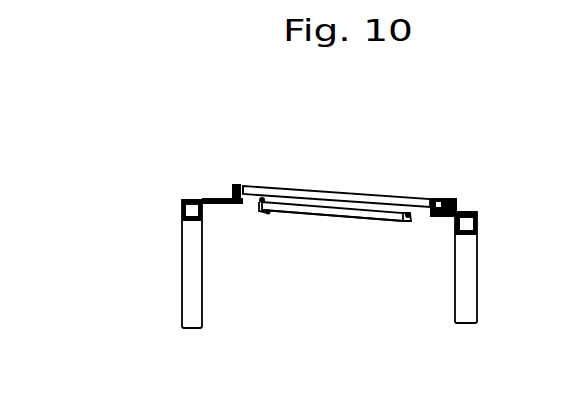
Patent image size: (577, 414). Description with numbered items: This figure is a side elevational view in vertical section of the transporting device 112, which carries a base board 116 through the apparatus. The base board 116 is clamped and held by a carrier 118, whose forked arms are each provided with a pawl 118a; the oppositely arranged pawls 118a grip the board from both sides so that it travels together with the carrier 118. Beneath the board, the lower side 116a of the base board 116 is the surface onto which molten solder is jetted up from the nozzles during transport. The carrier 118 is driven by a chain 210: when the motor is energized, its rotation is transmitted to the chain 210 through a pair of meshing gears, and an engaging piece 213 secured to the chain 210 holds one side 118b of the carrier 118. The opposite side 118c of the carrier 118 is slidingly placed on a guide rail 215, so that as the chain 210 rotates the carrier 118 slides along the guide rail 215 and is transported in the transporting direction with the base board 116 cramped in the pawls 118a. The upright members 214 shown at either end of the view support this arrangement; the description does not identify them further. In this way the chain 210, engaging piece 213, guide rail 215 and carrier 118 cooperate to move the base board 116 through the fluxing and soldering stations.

The transporting device 112 is at (475, 176).
The base board 116 is at (328, 216).
The lower side of the base board 116a is at (287, 214).
The carrier 118 is at (315, 190).
The pawl 118a is at (254, 212).
The one side of the carrier 118b is at (428, 197).
The opposite side of the carrier 118c is at (247, 186).
The chain 210 is at (447, 197).
The engaging piece 213 is at (436, 197).
The support legs 214 is at (182, 282).
The guide rail 215 is at (228, 184).